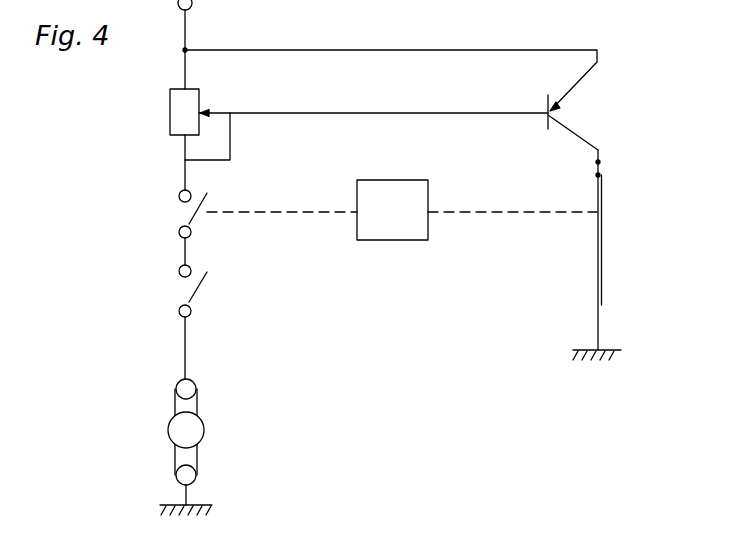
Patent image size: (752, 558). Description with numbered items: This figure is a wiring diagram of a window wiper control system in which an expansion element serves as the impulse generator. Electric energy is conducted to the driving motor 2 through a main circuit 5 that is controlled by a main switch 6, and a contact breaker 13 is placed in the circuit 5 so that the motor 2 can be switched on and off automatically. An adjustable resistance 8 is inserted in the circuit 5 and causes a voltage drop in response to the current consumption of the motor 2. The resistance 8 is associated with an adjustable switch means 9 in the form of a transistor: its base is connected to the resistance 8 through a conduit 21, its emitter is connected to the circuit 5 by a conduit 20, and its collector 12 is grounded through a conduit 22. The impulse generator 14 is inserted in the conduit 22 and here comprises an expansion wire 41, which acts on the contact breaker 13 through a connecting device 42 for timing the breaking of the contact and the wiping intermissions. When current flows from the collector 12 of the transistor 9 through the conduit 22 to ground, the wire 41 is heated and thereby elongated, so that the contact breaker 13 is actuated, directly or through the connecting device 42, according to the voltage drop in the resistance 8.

The driving motor 2 is at (167, 426).
The circuit 5 is at (183, 346).
The main switch 6 is at (192, 297).
The adjustable resistance 8 is at (169, 113).
The adjustable switch means 9 is at (575, 95).
The collector 12 is at (576, 128).
The contact breaker 13 is at (190, 218).
The impulse generator 14 is at (614, 197).
The conduit 20 is at (540, 49).
The conduit 21 is at (475, 111).
The conduit 22 is at (601, 161).
The expansion wire 41 is at (605, 261).
The connecting device 42 is at (390, 241).